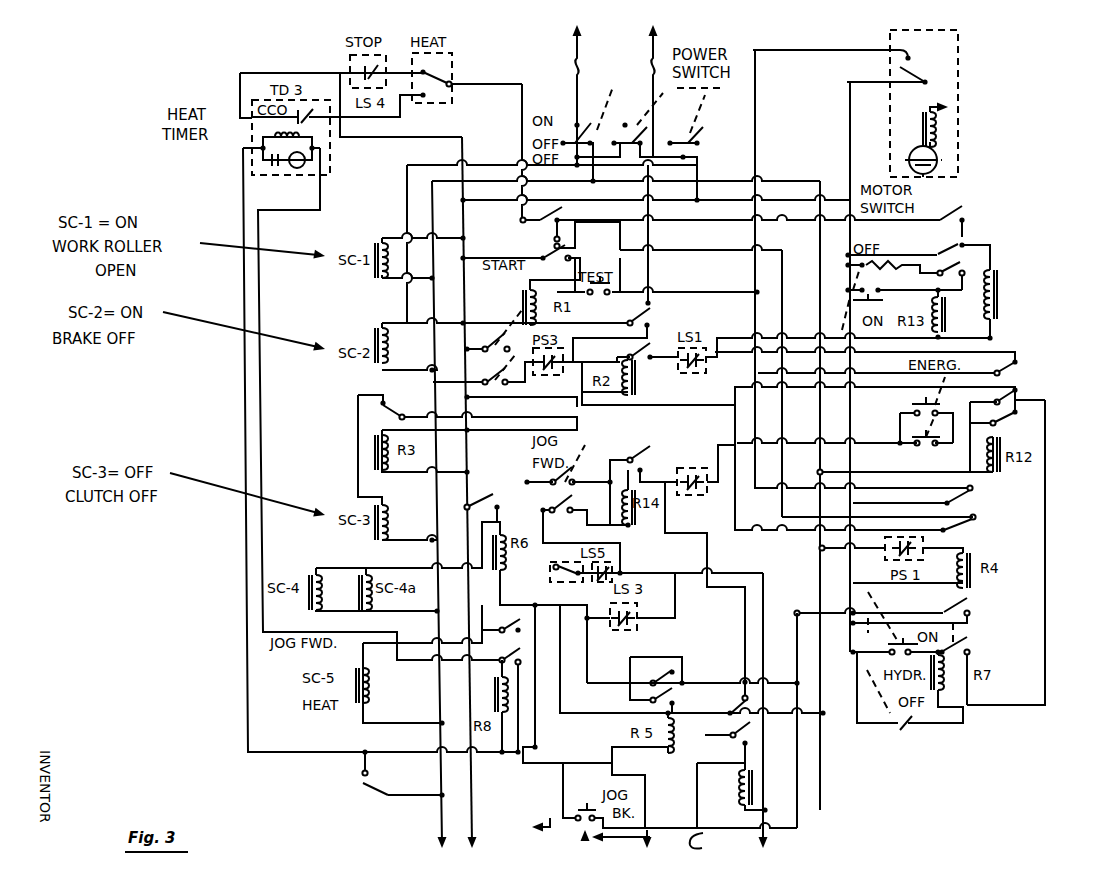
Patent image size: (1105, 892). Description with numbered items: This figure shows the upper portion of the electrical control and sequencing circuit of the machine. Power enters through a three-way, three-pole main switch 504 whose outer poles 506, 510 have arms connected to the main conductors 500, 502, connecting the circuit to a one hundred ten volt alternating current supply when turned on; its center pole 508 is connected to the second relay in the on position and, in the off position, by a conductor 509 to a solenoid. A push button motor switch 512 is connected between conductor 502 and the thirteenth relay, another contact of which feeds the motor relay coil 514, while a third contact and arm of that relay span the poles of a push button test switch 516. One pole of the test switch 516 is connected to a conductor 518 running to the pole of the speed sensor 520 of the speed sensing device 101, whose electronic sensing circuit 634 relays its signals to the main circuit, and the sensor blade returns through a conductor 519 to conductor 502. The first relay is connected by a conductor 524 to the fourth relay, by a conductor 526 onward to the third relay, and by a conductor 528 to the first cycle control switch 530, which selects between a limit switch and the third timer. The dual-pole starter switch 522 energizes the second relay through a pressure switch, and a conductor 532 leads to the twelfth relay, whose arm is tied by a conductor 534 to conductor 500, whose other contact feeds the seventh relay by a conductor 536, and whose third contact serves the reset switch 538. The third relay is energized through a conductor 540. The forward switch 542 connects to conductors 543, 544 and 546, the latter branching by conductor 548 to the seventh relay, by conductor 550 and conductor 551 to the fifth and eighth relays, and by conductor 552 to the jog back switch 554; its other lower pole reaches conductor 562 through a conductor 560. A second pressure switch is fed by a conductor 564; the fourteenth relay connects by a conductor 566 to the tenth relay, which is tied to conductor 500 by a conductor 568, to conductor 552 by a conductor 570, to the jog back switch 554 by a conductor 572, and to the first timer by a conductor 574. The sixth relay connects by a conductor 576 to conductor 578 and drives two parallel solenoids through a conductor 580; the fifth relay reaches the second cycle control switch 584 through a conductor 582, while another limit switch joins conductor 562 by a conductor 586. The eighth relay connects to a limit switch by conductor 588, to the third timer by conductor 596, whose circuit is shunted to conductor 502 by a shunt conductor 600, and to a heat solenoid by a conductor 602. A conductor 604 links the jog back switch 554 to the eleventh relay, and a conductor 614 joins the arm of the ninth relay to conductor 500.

The speed sensing device 101 is at (958, 38).
The main conductor 500 is at (407, 204).
The main conductor 502 is at (467, 217).
The main switch 504 is at (620, 78).
The outer pole 506 is at (573, 122).
The center pole 508 is at (597, 120).
The conductor 509 is at (500, 165).
The outer pole 510 is at (707, 128).
The push button motor switch 512 is at (885, 260).
The motor relay coil 514 is at (993, 258).
The push button test switch 516 is at (598, 255).
The conductor 518 is at (757, 320).
The conductor 519 is at (847, 105).
The speed sensor 520 is at (895, 46).
The starter switch 522 is at (470, 345).
The conductor 524 is at (783, 302).
The conductor 526 is at (713, 417).
The conductor 528 is at (520, 108).
The first cycle control switch 530 is at (455, 68).
The conductor 532 is at (698, 398).
The conductor 534 is at (877, 437).
The conductor 536 is at (1043, 520).
The reset switch 538 is at (895, 428).
The conductor 540 is at (505, 432).
The forward switch 542 is at (578, 460).
The conductor 543 is at (527, 480).
The conductor 544 is at (572, 518).
The conductor 546 is at (675, 555).
The conductor 548 is at (315, 72).
The conductor 550 is at (727, 682).
The conductor 551 is at (588, 642).
The conductor 552 is at (733, 827).
The jog back switch 554 is at (584, 835).
The conductor 560 is at (578, 537).
The conductor 562 is at (837, 820).
The conductor 564 is at (723, 477).
The conductor 566 is at (745, 622).
The conductor 568 is at (788, 716).
The conductor 570 is at (685, 812).
The conductor 572 is at (645, 795).
The conductor 574 is at (714, 840).
The conductor 576 is at (537, 692).
The conductor 578 is at (567, 748).
The conductor 580 is at (420, 566).
The conductor 582 is at (570, 700).
The second cycle control switch 584 is at (550, 567).
The conductor 586 is at (653, 620).
The conductor 588 is at (557, 767).
The conductor 596 is at (262, 433).
The shunt conductor 600 is at (418, 138).
The conductor 602 is at (418, 640).
The conductor 604 is at (545, 824).
The conductor 614 is at (415, 790).
The electronic sensing circuit 634 is at (945, 145).